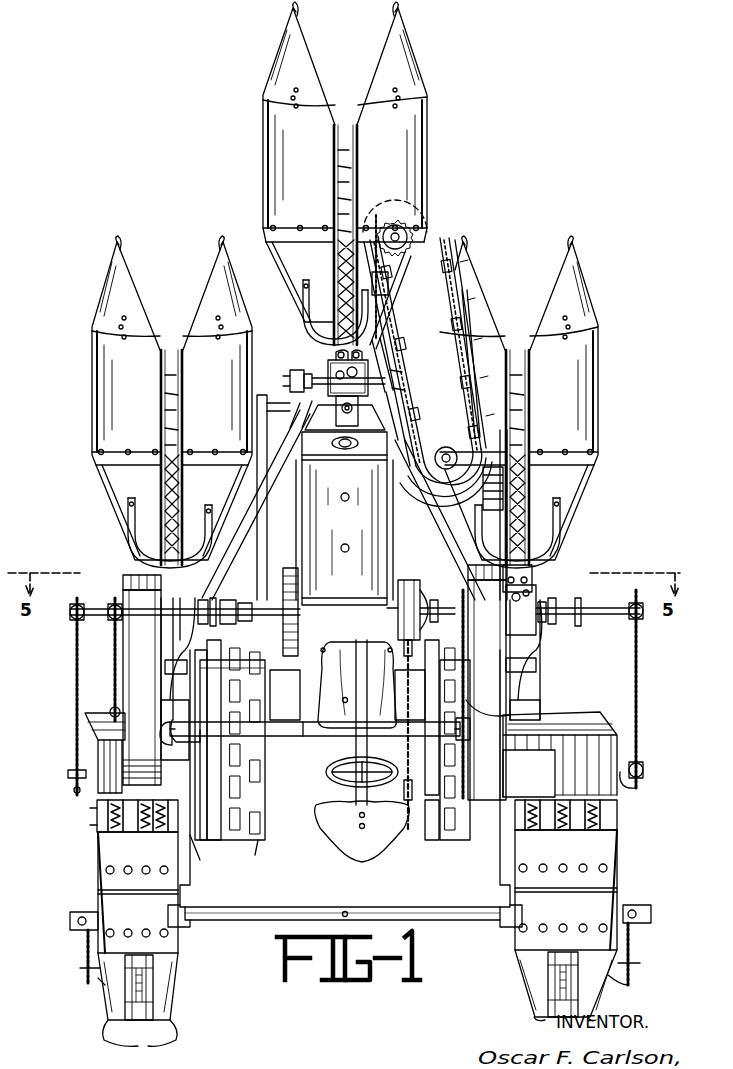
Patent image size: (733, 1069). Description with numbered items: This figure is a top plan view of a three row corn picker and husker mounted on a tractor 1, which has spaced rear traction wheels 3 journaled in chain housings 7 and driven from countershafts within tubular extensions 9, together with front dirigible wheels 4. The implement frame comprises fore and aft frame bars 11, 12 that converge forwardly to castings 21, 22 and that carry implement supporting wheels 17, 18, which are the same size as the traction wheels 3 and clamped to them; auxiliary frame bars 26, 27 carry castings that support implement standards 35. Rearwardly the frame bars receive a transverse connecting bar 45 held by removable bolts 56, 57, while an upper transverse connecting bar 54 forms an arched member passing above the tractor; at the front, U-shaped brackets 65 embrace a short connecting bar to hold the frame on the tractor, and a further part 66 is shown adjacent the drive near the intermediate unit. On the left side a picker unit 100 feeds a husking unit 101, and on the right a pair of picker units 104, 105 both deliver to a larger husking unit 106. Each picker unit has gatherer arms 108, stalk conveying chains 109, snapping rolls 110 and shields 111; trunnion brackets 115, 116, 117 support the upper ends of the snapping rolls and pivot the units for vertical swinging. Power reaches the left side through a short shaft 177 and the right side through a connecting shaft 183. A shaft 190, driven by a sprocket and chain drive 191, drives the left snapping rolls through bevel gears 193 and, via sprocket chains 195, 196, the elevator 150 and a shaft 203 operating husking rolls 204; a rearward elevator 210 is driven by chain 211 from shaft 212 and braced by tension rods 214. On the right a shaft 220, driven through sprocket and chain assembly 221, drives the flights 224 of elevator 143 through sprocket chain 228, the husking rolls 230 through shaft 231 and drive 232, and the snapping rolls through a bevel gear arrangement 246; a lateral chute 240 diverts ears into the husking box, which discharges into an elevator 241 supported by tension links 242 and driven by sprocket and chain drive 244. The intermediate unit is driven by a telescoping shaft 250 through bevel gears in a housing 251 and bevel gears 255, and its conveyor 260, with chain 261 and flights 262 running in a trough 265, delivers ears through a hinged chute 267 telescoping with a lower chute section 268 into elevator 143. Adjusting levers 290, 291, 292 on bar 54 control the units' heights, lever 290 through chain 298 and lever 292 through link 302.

The tractor 1 is at (332, 518).
The rear traction wheels 3 is at (420, 515).
The front dirigible wheels 4 is at (261, 486).
The chain housings 7 is at (268, 766).
The tubular extensions 9 is at (290, 692).
The frame bar 11 is at (272, 512).
The frame bar 12 is at (450, 545).
The implement supporting wheel 17 is at (220, 842).
The implement supporting wheel 18 is at (466, 838).
The casting 21 is at (310, 402).
The casting 22 is at (383, 412).
The auxiliary frame bar 26 is at (162, 655).
The auxiliary frame bar 27 is at (540, 648).
The implement supporting standards 35 is at (210, 600).
The transverse connecting bar 45 is at (292, 908).
The transverse connecting bar 54 is at (303, 738).
The removable bolt 56 is at (192, 925).
The removable bolt 57 is at (500, 925).
The U-shaped brackets 65 is at (305, 428).
The chain link 66 is at (414, 418).
The picker unit 100 is at (86, 384).
The husking unit 101 is at (114, 856).
The picker unit 104 is at (437, 108).
The picker unit 105 is at (598, 362).
The husking unit 106 is at (592, 853).
The gatherer arms 108 is at (395, 40).
The stalk conveying chains 109 is at (341, 125).
The snapping rolls 110 is at (183, 480).
The shields or guards 111 is at (278, 138).
The bracket 115 is at (162, 596).
The bracket 116 is at (552, 566).
The bracket or plate 117 is at (328, 365).
The elevator 143 is at (540, 680).
The elevator 150 is at (137, 705).
The short shaft 177 is at (282, 596).
The connecting shaft 183 is at (423, 610).
The shaft 190 is at (93, 608).
The sprocket and chain drive 191 is at (238, 600).
The bevel gears 193 is at (165, 632).
The sprocket chain 195 is at (114, 616).
The sprocket chain 196 is at (75, 618).
The shaft 203 is at (70, 774).
The husking rolls 204 is at (100, 824).
The elevator mechanism 210 is at (112, 985).
The chain 211 is at (82, 950).
The shaft 212 is at (78, 930).
The tension rods 214 is at (140, 1038).
The shaft 220 is at (600, 614).
The sprocket and chain assembly 221 is at (594, 601).
The paddles or flights 224 is at (487, 682).
The sprocket chain 228 is at (490, 668).
The husking rolls 230 is at (624, 803).
The shaft 231 is at (645, 780).
The sprocket and chain drive 232 is at (638, 670).
The lateral chute 240 is at (560, 754).
The elevator 241 is at (638, 988).
The tension links 242 is at (533, 1012).
The sprocket and chain drive 244 is at (636, 940).
The bevel gear arrangement 246 is at (523, 610).
The telescoping shaft 250 is at (292, 508).
The housing 251 is at (297, 370).
The bevel gears 255 is at (376, 370).
The elevator or conveyor mechanism 260 is at (447, 247).
The chain 261 is at (412, 300).
The paddles or flights 262 is at (455, 296).
The trough or way 265 is at (445, 318).
The hinged chute 267 is at (522, 505).
The lower chute section 268 is at (478, 548).
The adjusting lever 290 is at (436, 835).
The adjusting lever 291 is at (364, 823).
The adjusting lever 292 is at (160, 800).
The chain 298 is at (415, 682).
The link 302 is at (158, 718).